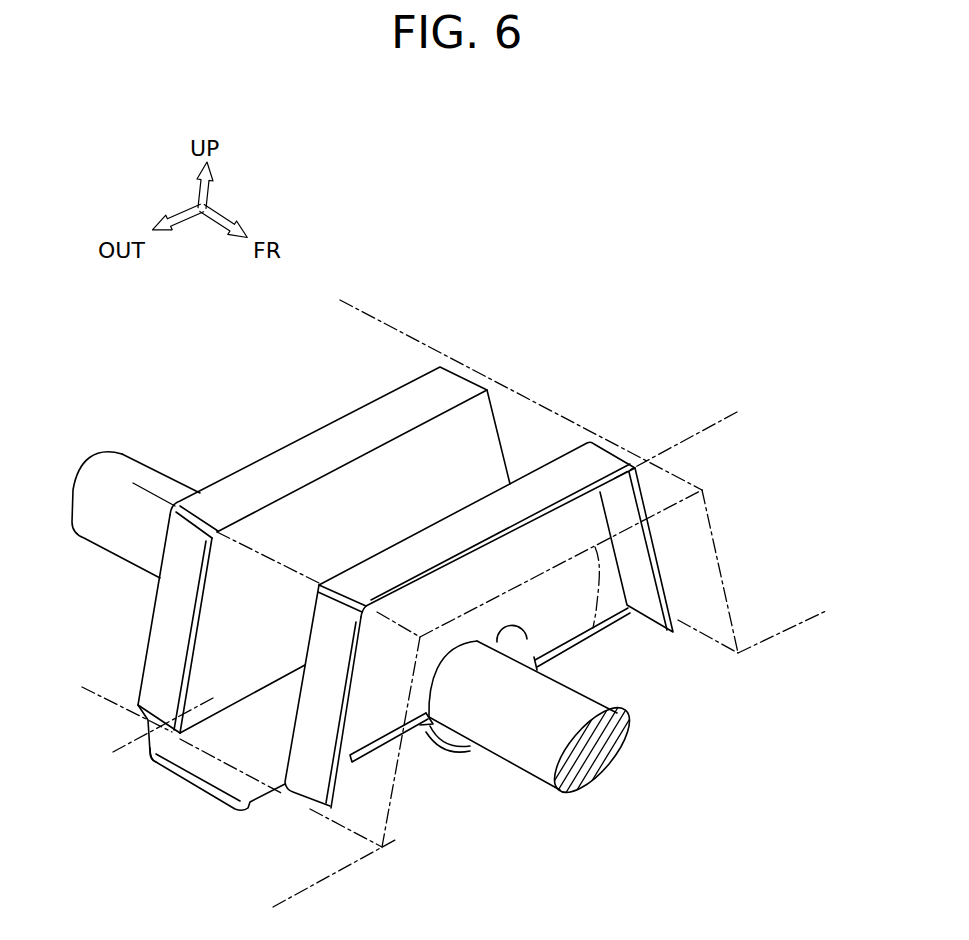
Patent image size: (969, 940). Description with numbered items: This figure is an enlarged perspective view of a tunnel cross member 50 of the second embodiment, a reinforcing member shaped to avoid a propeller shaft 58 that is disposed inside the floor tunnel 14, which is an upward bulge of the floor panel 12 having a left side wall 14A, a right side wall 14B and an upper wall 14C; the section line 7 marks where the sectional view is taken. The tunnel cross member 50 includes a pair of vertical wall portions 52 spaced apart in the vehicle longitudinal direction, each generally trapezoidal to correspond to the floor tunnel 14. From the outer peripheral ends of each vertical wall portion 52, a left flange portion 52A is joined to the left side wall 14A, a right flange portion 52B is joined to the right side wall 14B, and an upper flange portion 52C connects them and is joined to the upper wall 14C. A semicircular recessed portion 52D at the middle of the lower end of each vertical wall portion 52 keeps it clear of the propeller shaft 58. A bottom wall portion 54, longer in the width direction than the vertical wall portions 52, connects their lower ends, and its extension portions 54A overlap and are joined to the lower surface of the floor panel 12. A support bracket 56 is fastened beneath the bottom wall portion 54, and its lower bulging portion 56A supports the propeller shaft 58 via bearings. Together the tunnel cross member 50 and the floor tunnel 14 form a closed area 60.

The floor panel 12 is at (776, 646).
The floor tunnel 14 is at (400, 323).
The left side wall 14A is at (723, 573).
The right side wall 14B is at (400, 793).
The upper wall 14C is at (597, 628).
The tunnel cross member 50 is at (531, 423).
The vertical wall portion 52 is at (428, 599).
The left flange portion 52A is at (660, 552).
The right flange portion 52B is at (152, 630).
The upper flange portion 52C is at (242, 488).
The recessed portion 52D is at (516, 631).
The bottom wall portion 54 is at (197, 805).
The extension portion 54A is at (151, 758).
The support bracket 56 is at (520, 711).
The lower bulging portion 56A is at (460, 757).
The propeller shaft 58 is at (560, 790).
The closed area 60 is at (415, 497).
The section line 7- 7 is at (735, 412).